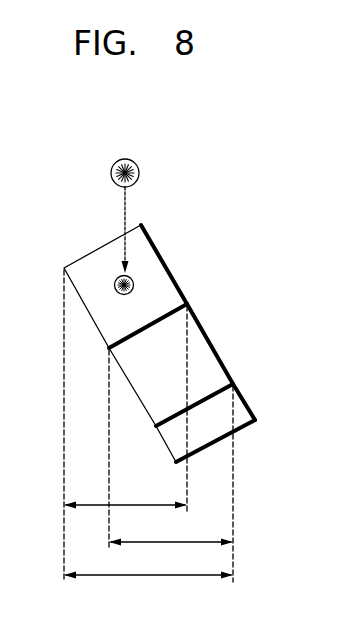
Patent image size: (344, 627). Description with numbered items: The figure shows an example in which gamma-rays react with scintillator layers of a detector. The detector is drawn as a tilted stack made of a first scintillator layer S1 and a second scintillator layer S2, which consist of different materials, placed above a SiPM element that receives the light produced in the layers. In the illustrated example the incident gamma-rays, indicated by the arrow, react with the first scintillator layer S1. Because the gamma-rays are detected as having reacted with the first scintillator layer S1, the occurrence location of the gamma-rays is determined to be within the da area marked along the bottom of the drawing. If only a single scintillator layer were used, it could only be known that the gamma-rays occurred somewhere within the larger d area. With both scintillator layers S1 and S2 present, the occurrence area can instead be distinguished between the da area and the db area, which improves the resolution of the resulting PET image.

The first scintillator layer S1 is at (167, 265).
The second scintillator layer S2 is at (217, 345).
The silicon photomultiplier SiPM is at (205, 423).
The da area da is at (125, 491).
The db area db is at (171, 528).
The d area d is at (148, 564).